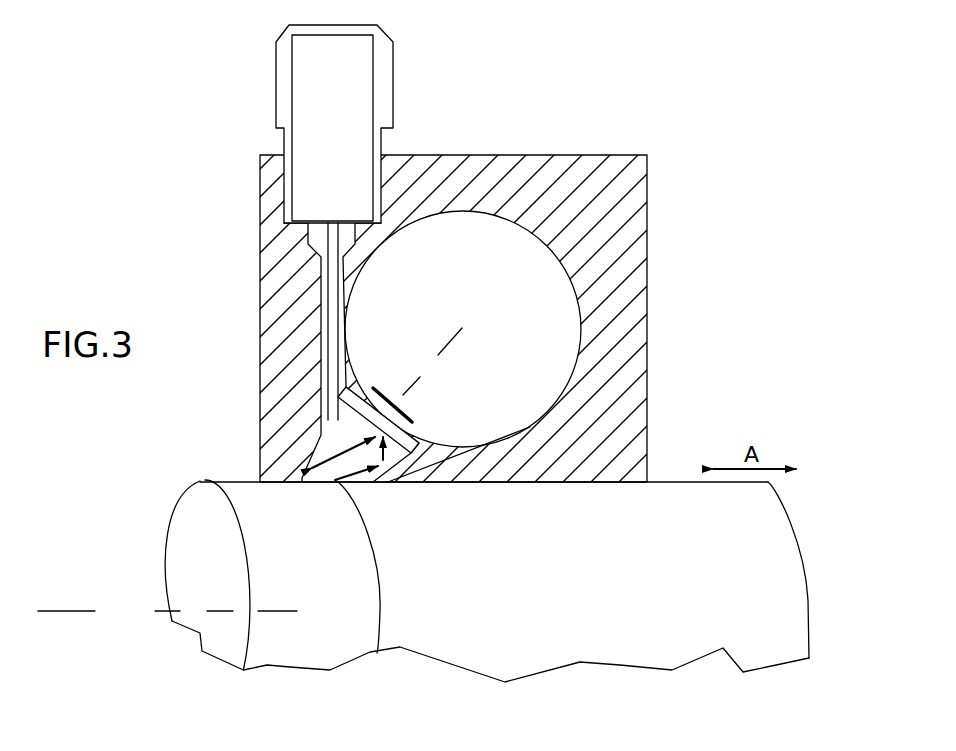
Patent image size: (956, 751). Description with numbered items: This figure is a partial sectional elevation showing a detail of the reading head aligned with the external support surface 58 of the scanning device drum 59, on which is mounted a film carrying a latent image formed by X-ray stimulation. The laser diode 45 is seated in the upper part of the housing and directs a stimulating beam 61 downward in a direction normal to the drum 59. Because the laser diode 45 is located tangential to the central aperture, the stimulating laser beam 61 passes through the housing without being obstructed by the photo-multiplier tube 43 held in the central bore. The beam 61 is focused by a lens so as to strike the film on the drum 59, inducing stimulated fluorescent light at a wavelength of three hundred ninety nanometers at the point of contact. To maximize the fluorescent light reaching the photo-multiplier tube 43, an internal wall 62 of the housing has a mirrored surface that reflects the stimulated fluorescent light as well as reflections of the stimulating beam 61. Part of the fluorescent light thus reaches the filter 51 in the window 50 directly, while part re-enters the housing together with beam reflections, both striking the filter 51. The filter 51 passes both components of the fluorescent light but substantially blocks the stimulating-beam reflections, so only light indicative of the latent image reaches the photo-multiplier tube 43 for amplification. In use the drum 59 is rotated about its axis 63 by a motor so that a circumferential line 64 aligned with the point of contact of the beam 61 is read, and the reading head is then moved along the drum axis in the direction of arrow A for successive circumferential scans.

The photo-multiplier tube 43 is at (490, 260).
The laser diode 45 is at (322, 155).
The window 50 is at (357, 386).
The filter 51 is at (386, 398).
The external support surface 58 is at (624, 482).
The scanning device drum 59 is at (770, 588).
The stimulating beam 61 is at (308, 233).
The internal wall 62 is at (331, 400).
The axis 63 is at (126, 608).
The circumferential line 64 is at (381, 613).